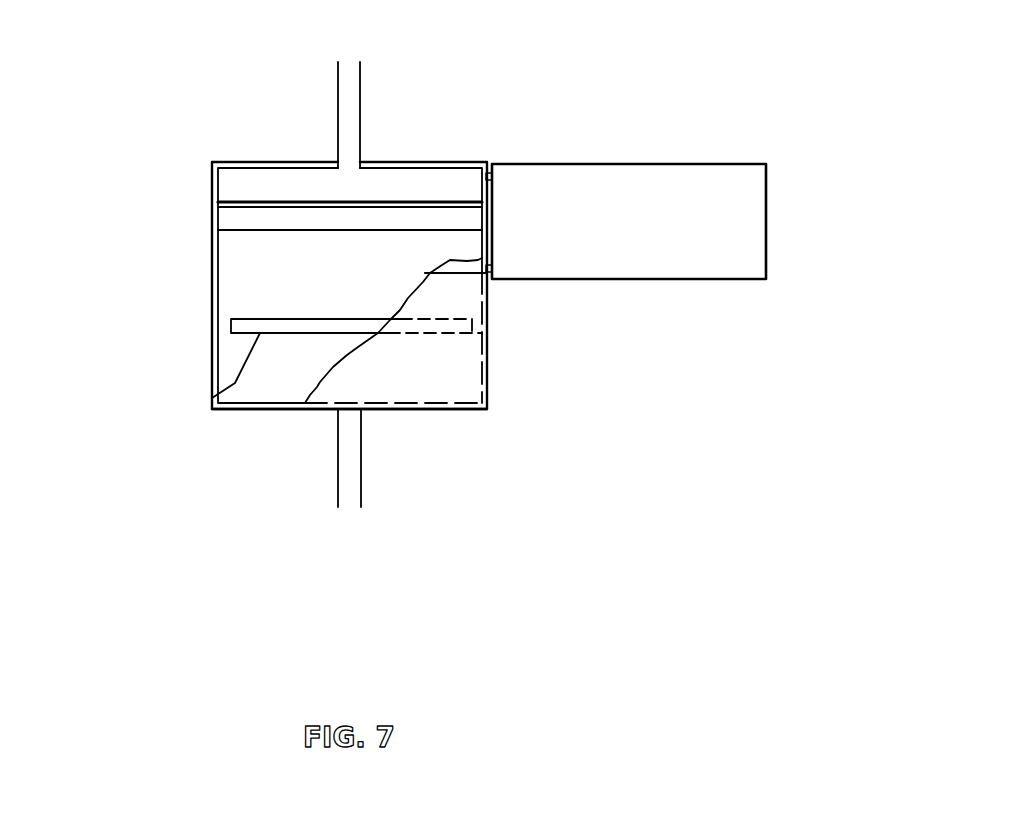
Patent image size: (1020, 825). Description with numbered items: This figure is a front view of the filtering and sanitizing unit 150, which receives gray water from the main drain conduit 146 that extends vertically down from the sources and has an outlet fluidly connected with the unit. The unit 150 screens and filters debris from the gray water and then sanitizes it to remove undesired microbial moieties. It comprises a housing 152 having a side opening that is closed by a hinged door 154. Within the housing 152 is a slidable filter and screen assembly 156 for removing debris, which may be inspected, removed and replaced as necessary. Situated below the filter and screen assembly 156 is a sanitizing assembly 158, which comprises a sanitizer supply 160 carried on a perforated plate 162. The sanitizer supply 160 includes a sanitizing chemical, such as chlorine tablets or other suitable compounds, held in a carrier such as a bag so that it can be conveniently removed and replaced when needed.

The main drain conduit 146 is at (335, 83).
The filtering and sanitizing unit 150 is at (167, 302).
The housing 152 is at (488, 410).
The hinged door 154 is at (755, 202).
The slidable filter and screen assembly 156 is at (262, 211).
The sanitizing assembly 158 is at (290, 333).
The sanitizer supply 160 is at (237, 328).
The perforated plate 162 is at (212, 398).